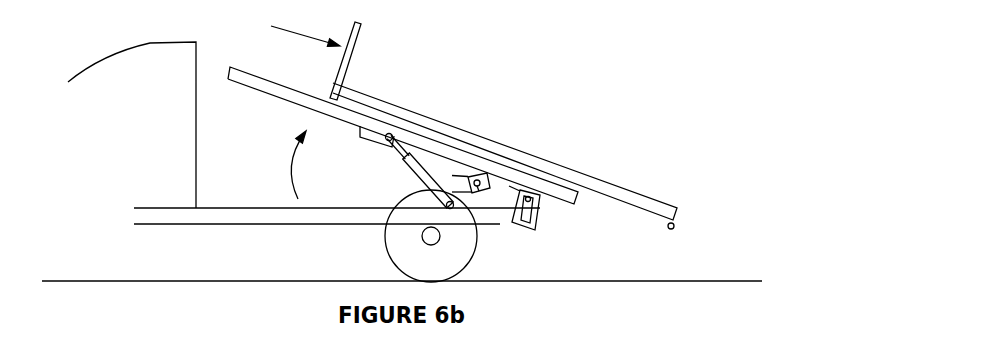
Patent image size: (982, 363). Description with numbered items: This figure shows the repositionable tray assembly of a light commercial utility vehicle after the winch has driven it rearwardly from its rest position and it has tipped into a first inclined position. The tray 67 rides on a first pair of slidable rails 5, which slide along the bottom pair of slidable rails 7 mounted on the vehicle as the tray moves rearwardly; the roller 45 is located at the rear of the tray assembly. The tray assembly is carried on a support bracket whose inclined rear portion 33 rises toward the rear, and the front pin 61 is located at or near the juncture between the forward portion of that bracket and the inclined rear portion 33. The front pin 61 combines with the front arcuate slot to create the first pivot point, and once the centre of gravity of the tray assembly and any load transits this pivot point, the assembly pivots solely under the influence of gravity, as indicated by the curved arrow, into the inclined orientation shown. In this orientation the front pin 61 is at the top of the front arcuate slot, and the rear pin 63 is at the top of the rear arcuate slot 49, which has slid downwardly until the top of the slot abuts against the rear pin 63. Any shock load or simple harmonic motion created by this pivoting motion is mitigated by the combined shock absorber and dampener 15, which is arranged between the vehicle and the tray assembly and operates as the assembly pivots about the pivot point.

The bottom pair of slidable rails 7 is at (268, 82).
The first pair of slidable rails 5 is at (477, 145).
The inclined rear portion 33 is at (509, 186).
The tray 67 is at (636, 197).
The roller 45 is at (677, 225).
The combined shock absorber and dampener 15 is at (413, 165).
The front pin 61 is at (477, 190).
The rear pin 63 is at (540, 200).
The rear arcuate slot 49 is at (530, 223).